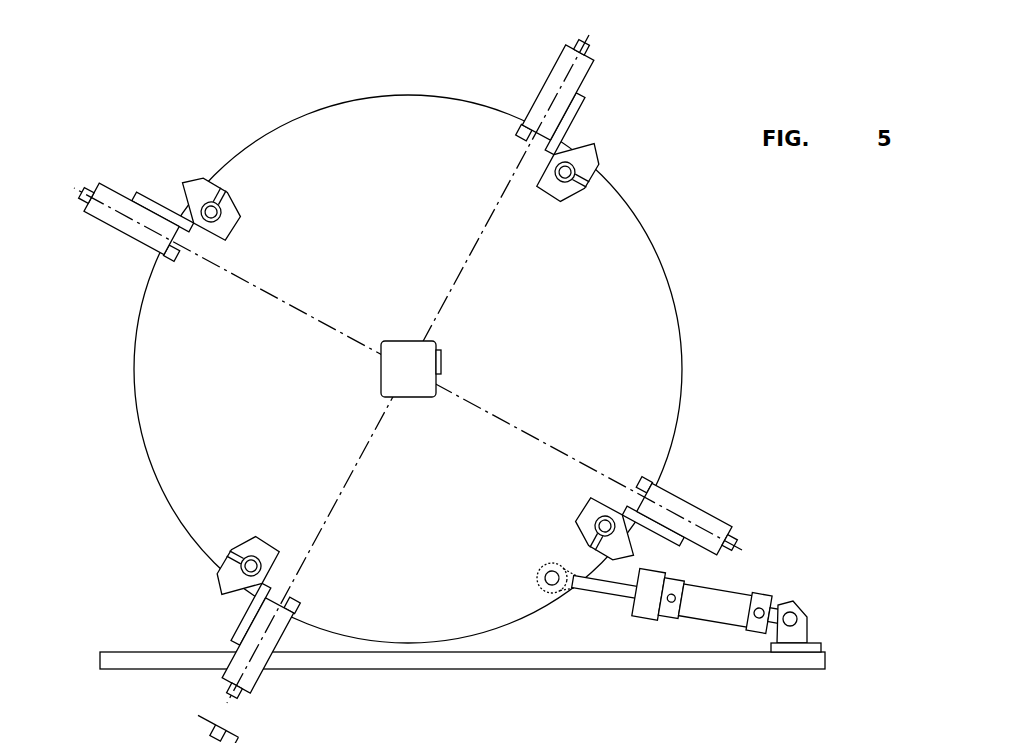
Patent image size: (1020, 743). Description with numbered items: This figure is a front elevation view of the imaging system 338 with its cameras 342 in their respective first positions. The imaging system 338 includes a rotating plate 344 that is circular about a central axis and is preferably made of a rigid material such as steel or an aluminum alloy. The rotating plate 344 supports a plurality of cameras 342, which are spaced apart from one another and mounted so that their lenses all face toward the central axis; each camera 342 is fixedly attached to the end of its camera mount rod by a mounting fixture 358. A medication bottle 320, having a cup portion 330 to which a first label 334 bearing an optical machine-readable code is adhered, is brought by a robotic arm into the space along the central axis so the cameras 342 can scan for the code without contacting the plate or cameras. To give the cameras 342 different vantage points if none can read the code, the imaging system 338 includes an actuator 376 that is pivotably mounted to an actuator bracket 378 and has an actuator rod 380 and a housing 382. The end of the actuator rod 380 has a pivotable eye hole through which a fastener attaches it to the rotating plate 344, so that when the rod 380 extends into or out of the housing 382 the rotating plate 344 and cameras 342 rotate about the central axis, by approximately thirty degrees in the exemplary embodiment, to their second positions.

The medication bottle 320 is at (415, 336).
The cup portion 330 is at (412, 355).
The first label 334 is at (441, 358).
The imaging system 338 is at (707, 296).
The camera 342 is at (545, 98).
The rotating plate 344 is at (328, 143).
The mounting fixture 358 is at (545, 203).
The actuator 376 is at (713, 634).
The actuator bracket 378 is at (800, 633).
The actuator rod 380 is at (596, 584).
The housing 382 is at (712, 608).